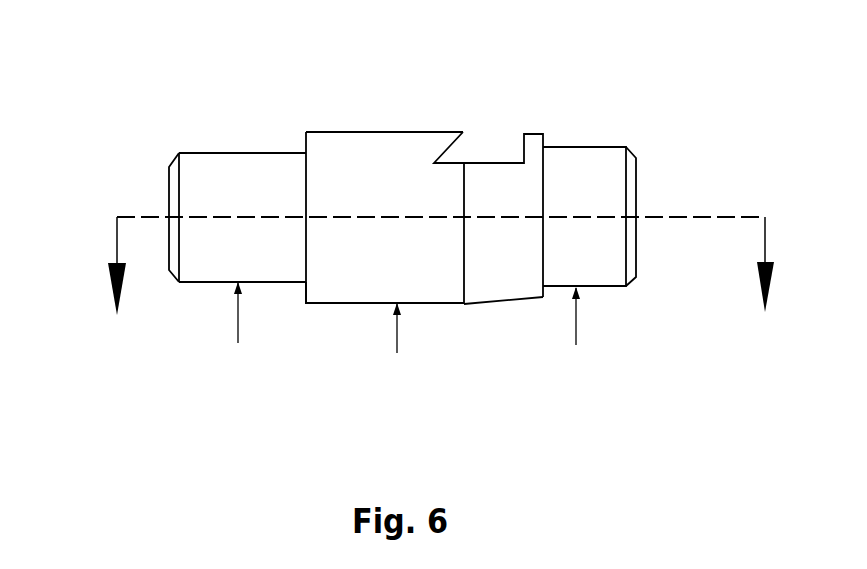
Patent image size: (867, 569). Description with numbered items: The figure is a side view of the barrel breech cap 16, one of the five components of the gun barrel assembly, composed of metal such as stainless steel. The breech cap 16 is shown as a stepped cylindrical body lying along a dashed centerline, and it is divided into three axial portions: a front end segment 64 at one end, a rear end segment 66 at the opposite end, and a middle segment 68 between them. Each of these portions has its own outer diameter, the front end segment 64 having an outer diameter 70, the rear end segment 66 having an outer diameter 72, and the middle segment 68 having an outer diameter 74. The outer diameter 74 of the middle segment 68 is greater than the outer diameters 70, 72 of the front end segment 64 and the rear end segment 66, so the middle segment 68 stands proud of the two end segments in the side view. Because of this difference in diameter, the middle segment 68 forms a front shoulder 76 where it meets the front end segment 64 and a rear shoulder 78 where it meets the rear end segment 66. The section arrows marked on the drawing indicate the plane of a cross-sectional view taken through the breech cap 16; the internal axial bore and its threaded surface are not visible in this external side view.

The barrel breech cap 16 is at (110, 108).
The front end segment 64 is at (636, 157).
The rear end segment 66 is at (169, 167).
The middle segment 68 is at (392, 276).
The outer diameter 70 is at (578, 146).
The outer diameter 72 is at (238, 154).
The outer diameter 74 is at (398, 131).
The front shoulder 76 is at (544, 296).
The rear shoulder 78 is at (305, 297).